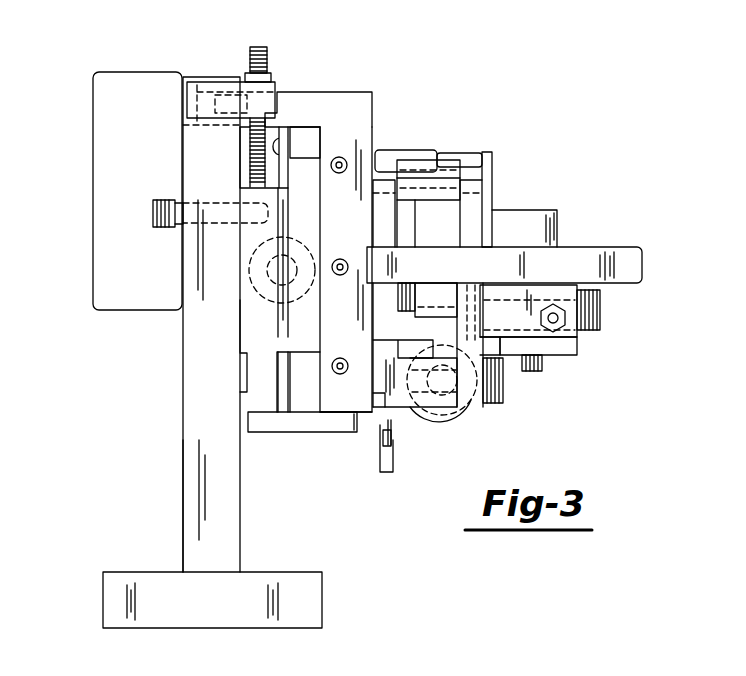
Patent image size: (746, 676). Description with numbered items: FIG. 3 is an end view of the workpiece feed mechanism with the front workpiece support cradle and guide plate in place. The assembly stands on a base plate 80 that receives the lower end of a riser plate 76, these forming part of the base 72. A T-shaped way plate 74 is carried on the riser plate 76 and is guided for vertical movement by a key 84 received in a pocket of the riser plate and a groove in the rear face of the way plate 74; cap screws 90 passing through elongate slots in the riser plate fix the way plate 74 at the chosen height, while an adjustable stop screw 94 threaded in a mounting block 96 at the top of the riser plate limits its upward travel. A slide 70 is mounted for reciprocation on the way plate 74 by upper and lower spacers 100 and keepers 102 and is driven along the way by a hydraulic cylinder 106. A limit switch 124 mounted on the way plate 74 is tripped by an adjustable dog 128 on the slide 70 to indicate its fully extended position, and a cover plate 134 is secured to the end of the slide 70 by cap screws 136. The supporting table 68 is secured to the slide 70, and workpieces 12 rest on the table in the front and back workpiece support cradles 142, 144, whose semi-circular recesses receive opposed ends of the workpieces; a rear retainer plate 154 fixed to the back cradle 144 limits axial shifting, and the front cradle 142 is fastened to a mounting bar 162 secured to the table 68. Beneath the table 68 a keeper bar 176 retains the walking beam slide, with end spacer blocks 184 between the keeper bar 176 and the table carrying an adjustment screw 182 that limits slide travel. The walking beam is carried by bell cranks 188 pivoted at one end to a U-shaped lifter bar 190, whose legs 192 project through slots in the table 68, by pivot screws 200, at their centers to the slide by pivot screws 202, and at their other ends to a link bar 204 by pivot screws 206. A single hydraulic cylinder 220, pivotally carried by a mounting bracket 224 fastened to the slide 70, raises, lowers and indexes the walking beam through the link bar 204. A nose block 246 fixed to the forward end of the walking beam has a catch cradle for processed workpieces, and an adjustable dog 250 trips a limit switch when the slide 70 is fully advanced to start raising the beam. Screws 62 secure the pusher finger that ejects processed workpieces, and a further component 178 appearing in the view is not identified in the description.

The workpieces 12 is at (408, 143).
The screws 62 is at (460, 152).
The supporting table 68 is at (650, 245).
The slide 70 is at (347, 126).
The base 72 is at (176, 464).
The T-shaped way plate 74 is at (252, 318).
The riser plate 76 is at (183, 525).
The base plate 80 is at (103, 612).
The key 84 is at (243, 368).
The cap screws 90 is at (153, 214).
The screw 94 is at (250, 56).
The mounting block 96 is at (225, 90).
The spacers 100 is at (303, 128).
The keepers 102 is at (281, 127).
The hydraulic cylinder 106 is at (252, 252).
The limit switch 124 is at (93, 130).
The adjustable dog 128 is at (307, 126).
The cover plate 134 is at (363, 408).
The cap screws 136 is at (358, 330).
The front workpiece support cradle 142 is at (478, 187).
The back workpiece support cradle 144 is at (385, 216).
The rear retainer plate 154 is at (395, 152).
The mounting bar 162 is at (558, 232).
The keeper bar 176 is at (555, 356).
The knob 178 is at (530, 372).
The adjustment screw 182 is at (563, 327).
The end spacer blocks 184 is at (578, 345).
The bell cranks 188 is at (481, 412).
The lifter bar 190 is at (434, 322).
The legs 192 is at (447, 212).
The pivot screws 200 is at (397, 302).
The pivot screws 202 is at (603, 300).
The link bar 204 is at (452, 412).
The pivot screws 206 is at (505, 400).
The hydraulic cylinder 220 is at (455, 420).
The mounting bracket 224 is at (392, 412).
The nose block 246 is at (490, 160).
The adjustable dog 250 is at (368, 440).